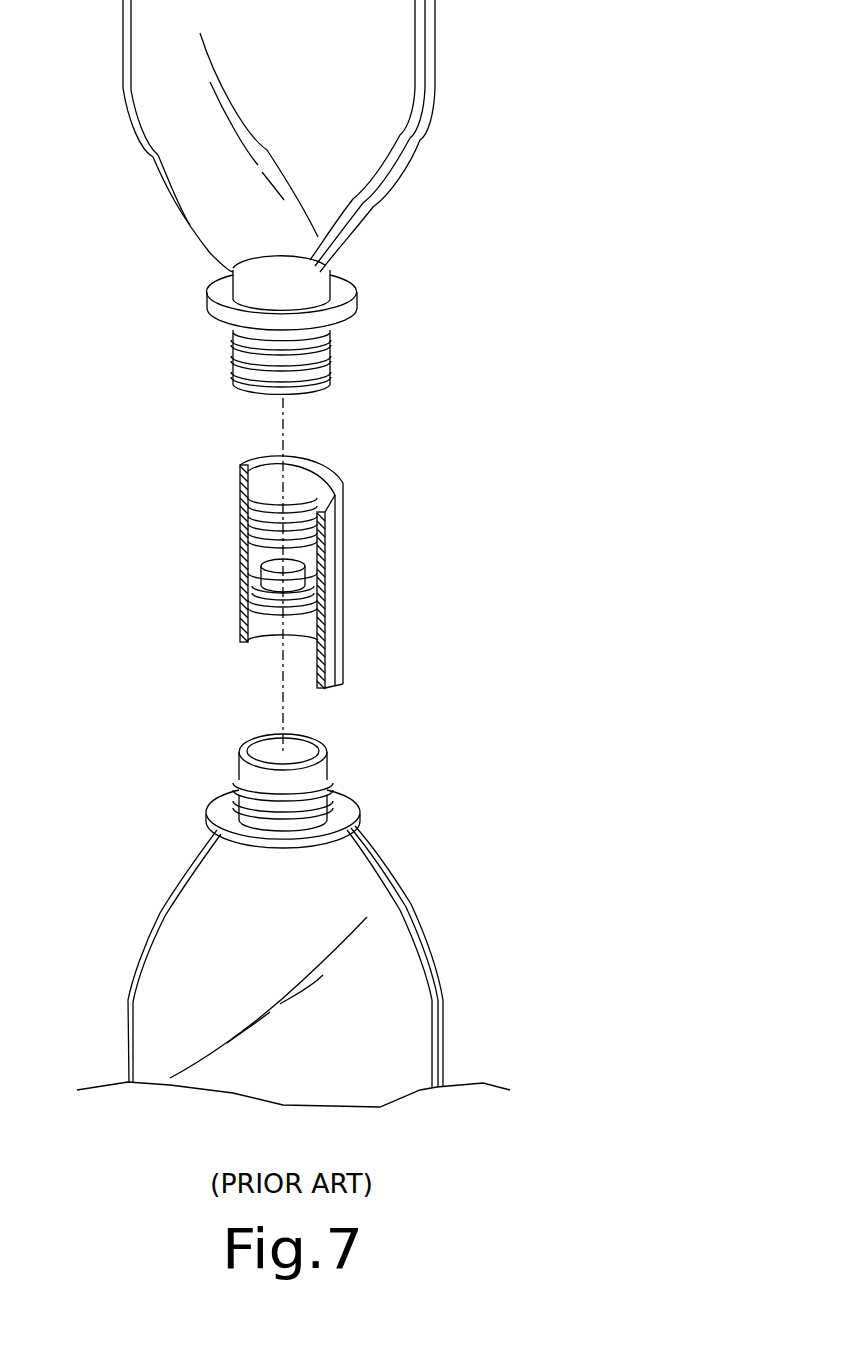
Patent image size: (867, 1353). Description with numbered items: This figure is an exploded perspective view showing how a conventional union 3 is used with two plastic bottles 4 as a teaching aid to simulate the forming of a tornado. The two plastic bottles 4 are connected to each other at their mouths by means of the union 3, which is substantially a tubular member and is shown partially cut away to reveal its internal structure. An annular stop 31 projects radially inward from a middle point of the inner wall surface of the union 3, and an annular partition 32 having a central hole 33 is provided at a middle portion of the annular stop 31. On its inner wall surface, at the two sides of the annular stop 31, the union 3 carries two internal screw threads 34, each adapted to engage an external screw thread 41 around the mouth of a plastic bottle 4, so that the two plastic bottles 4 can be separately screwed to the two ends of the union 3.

The union 3 is at (353, 610).
The annular stop 31 is at (333, 350).
The annular partition 32 is at (290, 607).
The central hole 33 is at (305, 560).
The internal screw thread 34 is at (258, 500).
The plastic bottle 4 is at (390, 207).
The external screw thread 41 is at (333, 777).